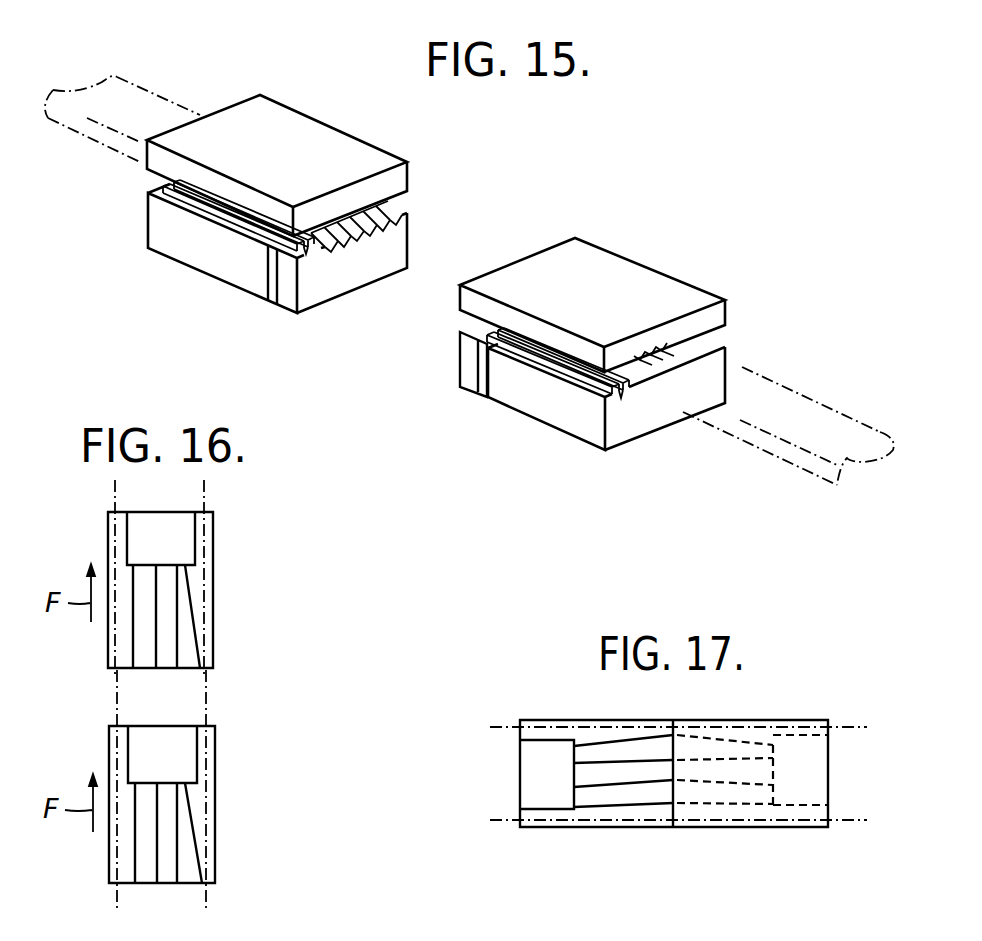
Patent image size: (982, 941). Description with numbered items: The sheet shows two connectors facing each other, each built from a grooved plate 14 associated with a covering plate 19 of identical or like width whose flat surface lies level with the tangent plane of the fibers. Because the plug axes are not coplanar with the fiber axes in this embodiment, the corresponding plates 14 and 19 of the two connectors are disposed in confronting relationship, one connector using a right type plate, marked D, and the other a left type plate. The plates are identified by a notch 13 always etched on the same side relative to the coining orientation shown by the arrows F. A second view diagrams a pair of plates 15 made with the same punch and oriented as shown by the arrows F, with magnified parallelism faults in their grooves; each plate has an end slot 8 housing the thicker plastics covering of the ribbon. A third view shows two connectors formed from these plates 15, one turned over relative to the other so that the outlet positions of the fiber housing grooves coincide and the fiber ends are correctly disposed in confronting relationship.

In FIG. 15, the covering plate 19 is at (332, 138).
In FIG. 15, the notch 13 is at (268, 287).
In FIG. 15, the plate 14 is at (313, 295).
In FIG. 15, the right plate D is at (431, 336).
In FIG. 16, the slot 8 is at (182, 517).
In FIG. 16, the plate 15 is at (215, 585).